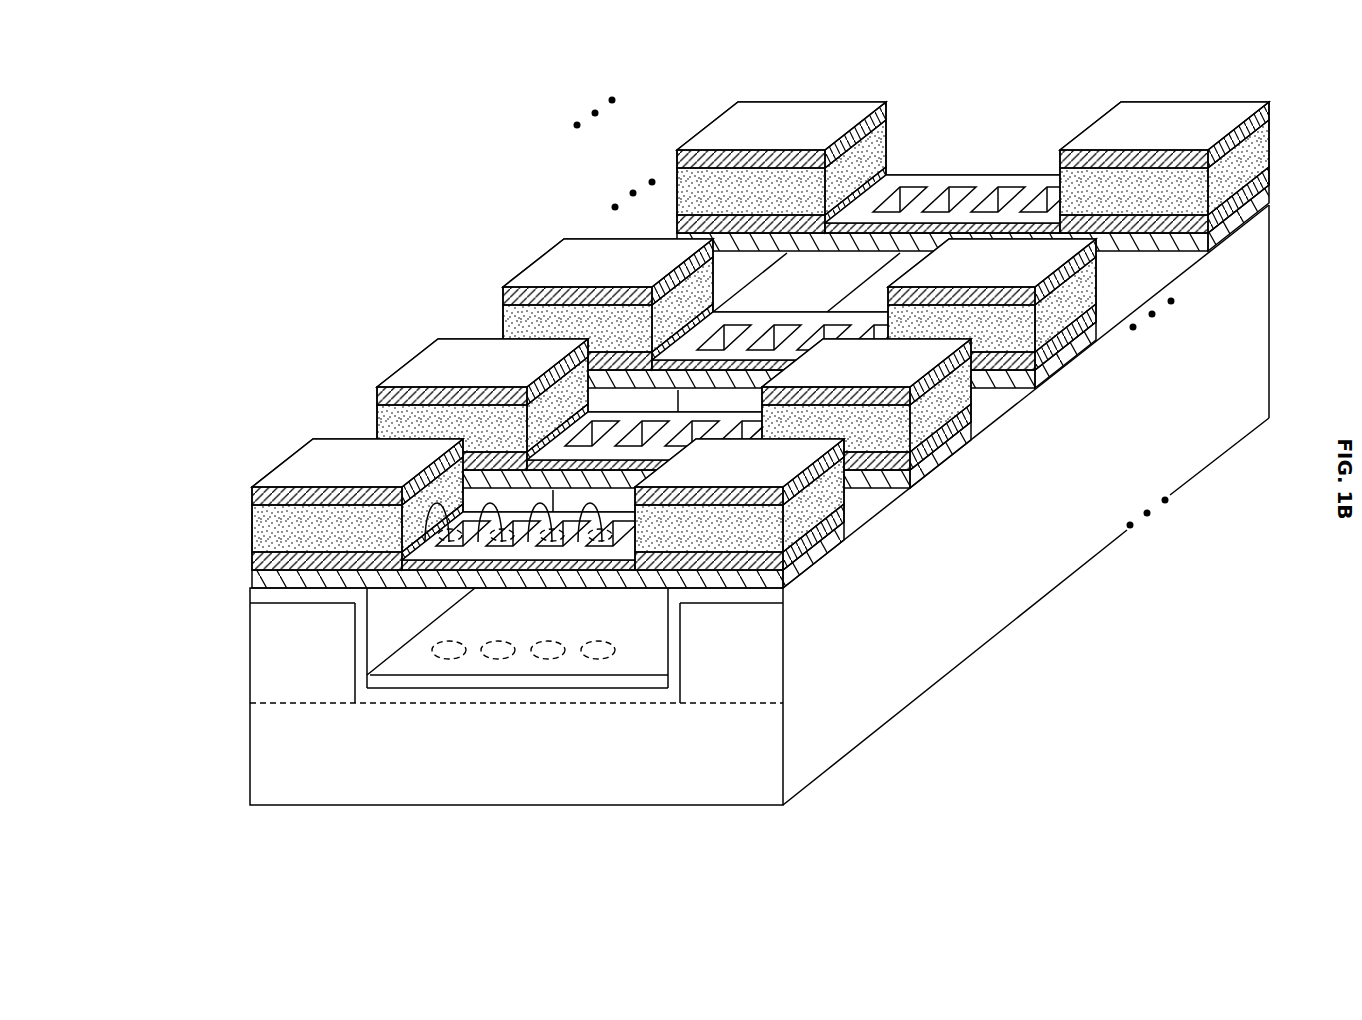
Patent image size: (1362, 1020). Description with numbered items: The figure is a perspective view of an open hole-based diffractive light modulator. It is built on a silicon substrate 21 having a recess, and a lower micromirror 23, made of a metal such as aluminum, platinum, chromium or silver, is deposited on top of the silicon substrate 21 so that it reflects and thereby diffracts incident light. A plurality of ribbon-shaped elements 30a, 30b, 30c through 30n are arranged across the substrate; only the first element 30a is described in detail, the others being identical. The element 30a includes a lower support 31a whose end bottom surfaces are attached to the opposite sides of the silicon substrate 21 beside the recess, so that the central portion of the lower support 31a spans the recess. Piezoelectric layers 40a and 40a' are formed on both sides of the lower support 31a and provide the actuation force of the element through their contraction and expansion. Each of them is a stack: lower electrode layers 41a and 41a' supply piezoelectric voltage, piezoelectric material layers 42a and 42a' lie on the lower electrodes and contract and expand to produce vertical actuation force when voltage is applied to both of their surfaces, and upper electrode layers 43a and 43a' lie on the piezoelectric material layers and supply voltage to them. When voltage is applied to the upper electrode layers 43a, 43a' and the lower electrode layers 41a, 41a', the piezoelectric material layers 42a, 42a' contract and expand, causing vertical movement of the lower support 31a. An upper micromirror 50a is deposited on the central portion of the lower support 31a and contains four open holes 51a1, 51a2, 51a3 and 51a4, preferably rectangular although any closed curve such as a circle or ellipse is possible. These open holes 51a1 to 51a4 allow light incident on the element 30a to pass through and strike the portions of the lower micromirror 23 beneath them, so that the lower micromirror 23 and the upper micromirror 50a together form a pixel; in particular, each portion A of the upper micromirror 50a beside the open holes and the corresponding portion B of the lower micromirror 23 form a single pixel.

The silicon substrate 21 is at (728, 797).
The lower micromirror 23 is at (380, 680).
The element 30a is at (567, 586).
The element 30b is at (410, 345).
The element 30c is at (533, 260).
The element 30n is at (707, 123).
The lower support 31a is at (251, 579).
The piezoelectric layer 40a is at (305, 438).
The lower electrode layer 41a is at (315, 481).
The piezoelectric material layer 42a is at (326, 455).
The upper electrode layer 43a is at (340, 417).
The piezoelectric layer 40a' is at (846, 623).
The lower electrode layer 41a' is at (799, 647).
The piezoelectric material layer 42a' is at (821, 603).
The upper electrode layer 43a' is at (838, 574).
The upper micromirror 50a is at (600, 667).
The open hole 51a1 is at (437, 503).
The open hole 51a2 is at (490, 503).
The open hole 51a3 is at (540, 503).
The open hole 51a4 is at (590, 503).
The portion of the upper micromirror A is at (590, 503).
The portion of the lower micromirror B is at (449, 655).